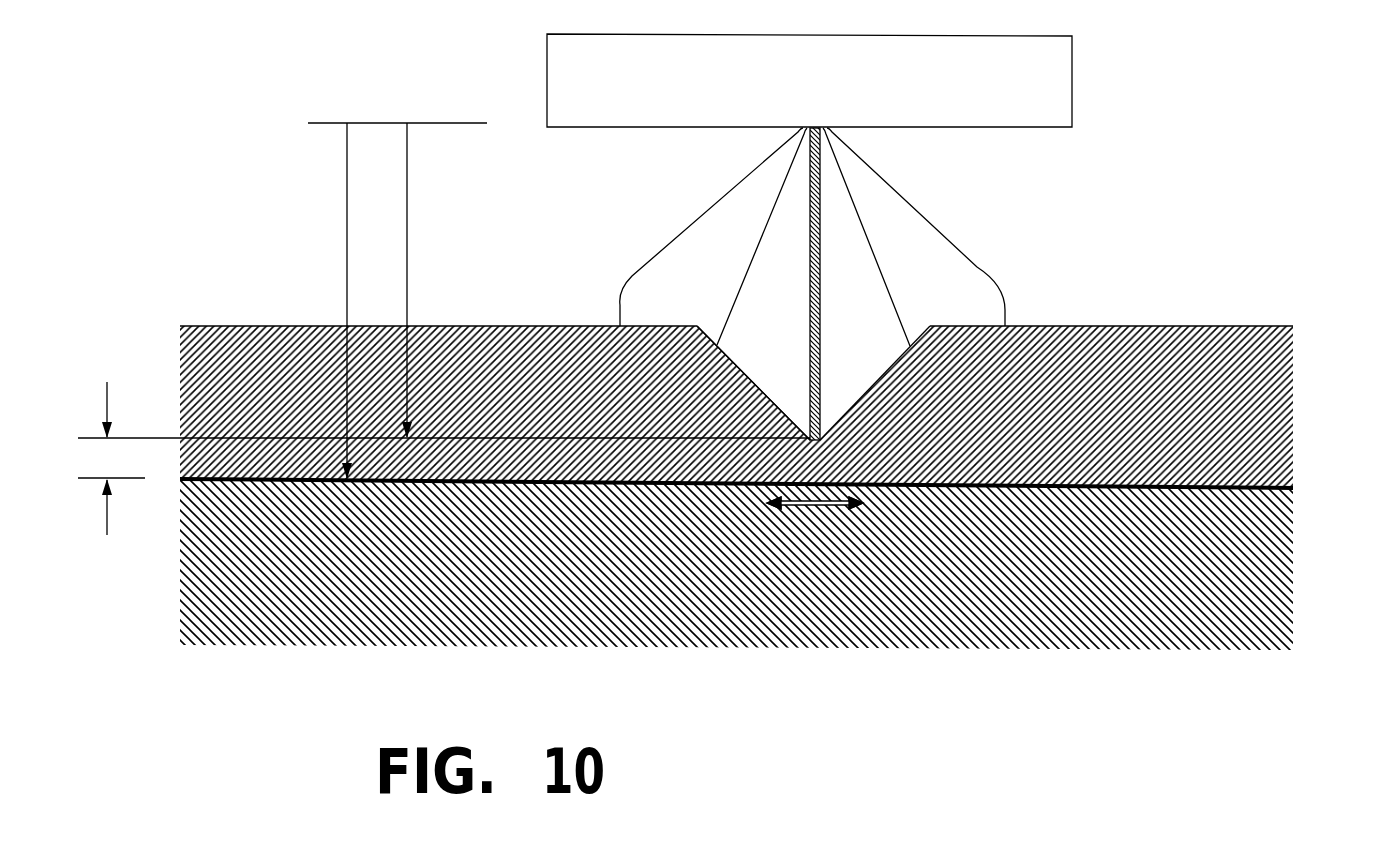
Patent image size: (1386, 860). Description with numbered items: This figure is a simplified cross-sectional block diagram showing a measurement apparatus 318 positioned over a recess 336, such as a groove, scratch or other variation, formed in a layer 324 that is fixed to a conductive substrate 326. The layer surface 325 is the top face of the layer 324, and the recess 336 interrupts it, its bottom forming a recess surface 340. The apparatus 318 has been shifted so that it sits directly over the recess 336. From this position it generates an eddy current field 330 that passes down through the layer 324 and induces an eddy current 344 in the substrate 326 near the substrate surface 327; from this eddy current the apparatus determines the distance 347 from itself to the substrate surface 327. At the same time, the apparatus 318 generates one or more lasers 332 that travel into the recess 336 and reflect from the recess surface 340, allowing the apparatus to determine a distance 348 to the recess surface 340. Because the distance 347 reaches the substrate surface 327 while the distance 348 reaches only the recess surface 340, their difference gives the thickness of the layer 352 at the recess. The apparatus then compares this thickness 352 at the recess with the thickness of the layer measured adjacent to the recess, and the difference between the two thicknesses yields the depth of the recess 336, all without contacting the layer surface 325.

The measurement apparatus 318 is at (871, 79).
The layer 324 is at (736, 352).
The layer surface 325 is at (1183, 325).
The substrate 326 is at (736, 602).
The substrate surface 327 is at (1253, 486).
The eddy current field 330 is at (975, 265).
The laser beam 332 is at (823, 203).
The recess 336 is at (774, 237).
The recess surface 340 is at (744, 362).
The eddy current 344 is at (812, 511).
The distance to the substrate surface 347 is at (383, 300).
The distance to the recess surface 348 is at (435, 280).
The thickness of the layer at the recess 352 is at (444, 441).